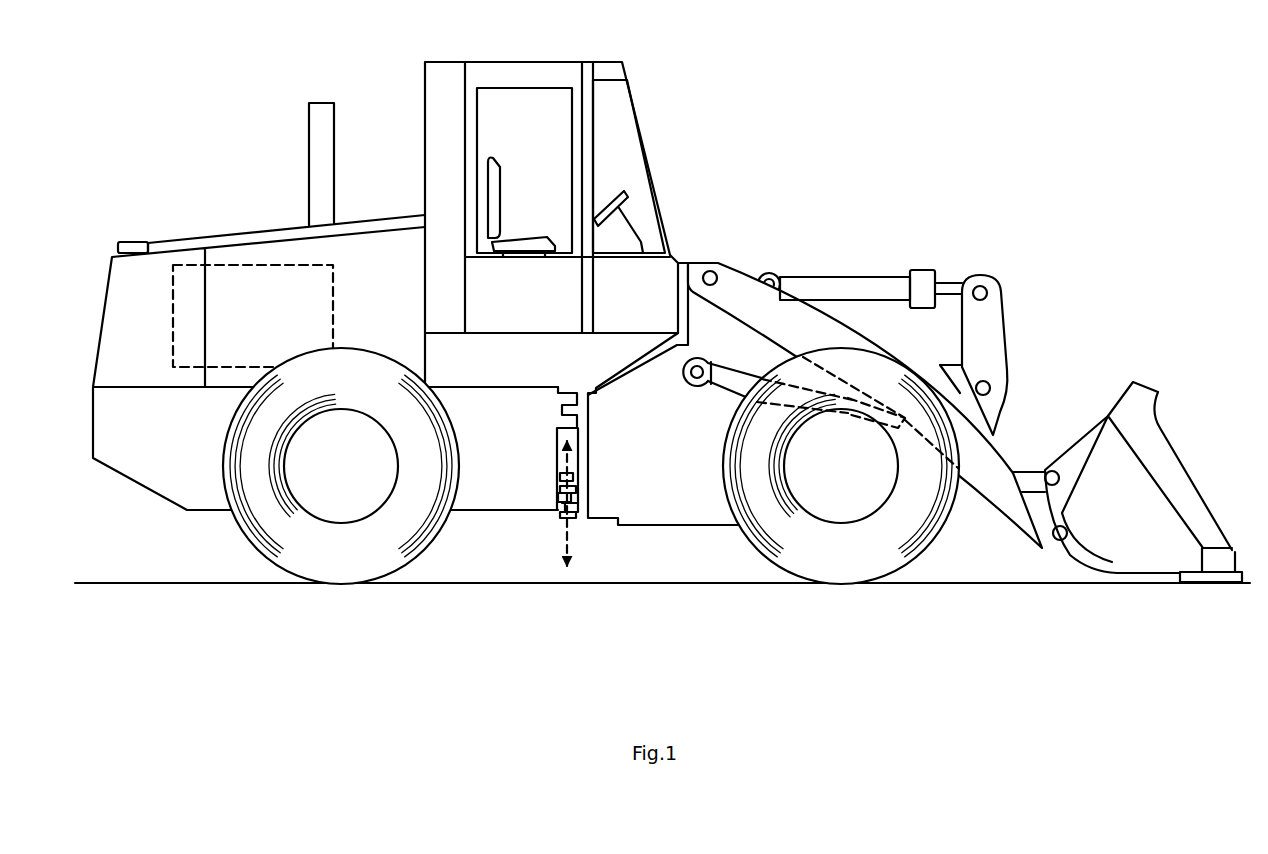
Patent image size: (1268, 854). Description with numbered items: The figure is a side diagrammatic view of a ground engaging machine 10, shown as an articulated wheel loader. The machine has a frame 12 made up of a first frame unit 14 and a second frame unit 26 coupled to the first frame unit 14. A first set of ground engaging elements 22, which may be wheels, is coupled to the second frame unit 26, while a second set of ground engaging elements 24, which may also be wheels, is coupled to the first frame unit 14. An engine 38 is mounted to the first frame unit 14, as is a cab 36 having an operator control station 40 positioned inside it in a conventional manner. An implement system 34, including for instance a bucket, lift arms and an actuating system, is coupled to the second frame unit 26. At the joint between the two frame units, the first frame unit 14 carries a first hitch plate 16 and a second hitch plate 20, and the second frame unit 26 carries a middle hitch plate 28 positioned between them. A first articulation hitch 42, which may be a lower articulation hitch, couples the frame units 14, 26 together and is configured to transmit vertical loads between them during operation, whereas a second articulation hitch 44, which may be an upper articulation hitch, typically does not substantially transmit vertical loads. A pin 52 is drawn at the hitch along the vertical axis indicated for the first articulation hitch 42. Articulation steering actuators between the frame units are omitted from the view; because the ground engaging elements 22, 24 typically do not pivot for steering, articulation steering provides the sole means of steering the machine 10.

The ground engaging machine 10 is at (106, 106).
The frame 12 is at (112, 256).
The first frame unit 14 is at (124, 464).
The first hitch plate 16 is at (578, 489).
The second hitch plate 20 is at (580, 507).
The first set of ground engaging elements 22 is at (257, 556).
The second set of ground engaging elements 24 is at (925, 556).
The second frame unit 26 is at (664, 527).
The middle hitch plate 28 is at (559, 495).
The implement system 34 is at (962, 423).
The cab 36 is at (624, 63).
The engine 38 is at (173, 338).
The operator control station 40 is at (603, 182).
The first articulation hitch 42 is at (556, 528).
The second articulation hitch 44 is at (552, 431).
The hitch pin 52 is at (574, 457).